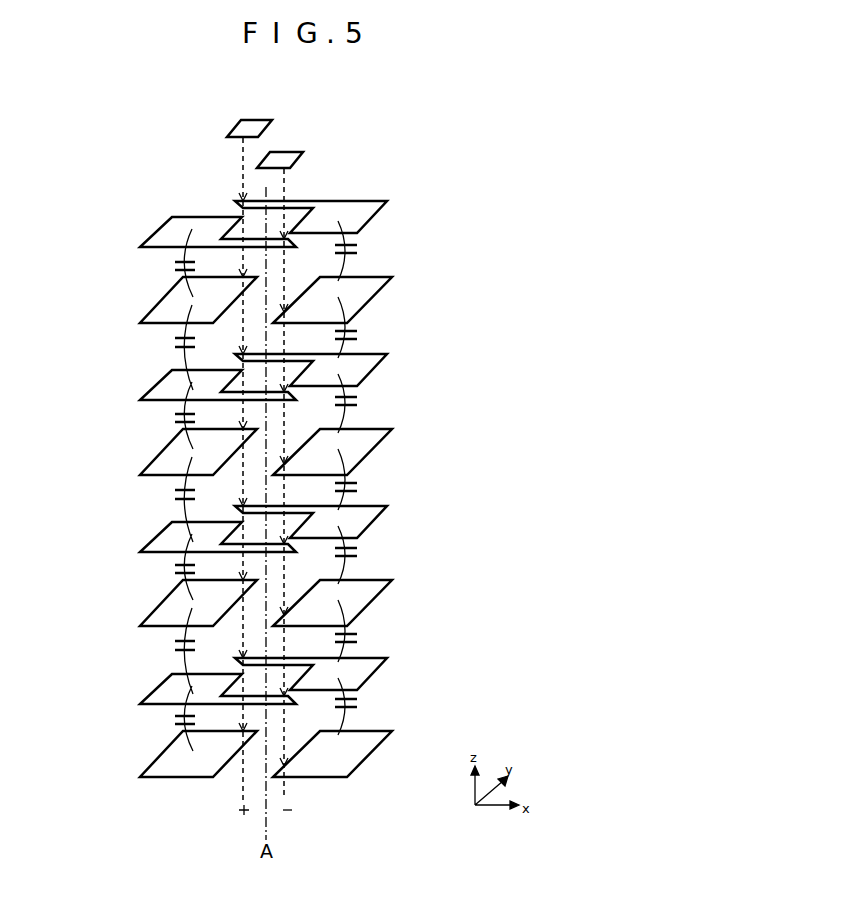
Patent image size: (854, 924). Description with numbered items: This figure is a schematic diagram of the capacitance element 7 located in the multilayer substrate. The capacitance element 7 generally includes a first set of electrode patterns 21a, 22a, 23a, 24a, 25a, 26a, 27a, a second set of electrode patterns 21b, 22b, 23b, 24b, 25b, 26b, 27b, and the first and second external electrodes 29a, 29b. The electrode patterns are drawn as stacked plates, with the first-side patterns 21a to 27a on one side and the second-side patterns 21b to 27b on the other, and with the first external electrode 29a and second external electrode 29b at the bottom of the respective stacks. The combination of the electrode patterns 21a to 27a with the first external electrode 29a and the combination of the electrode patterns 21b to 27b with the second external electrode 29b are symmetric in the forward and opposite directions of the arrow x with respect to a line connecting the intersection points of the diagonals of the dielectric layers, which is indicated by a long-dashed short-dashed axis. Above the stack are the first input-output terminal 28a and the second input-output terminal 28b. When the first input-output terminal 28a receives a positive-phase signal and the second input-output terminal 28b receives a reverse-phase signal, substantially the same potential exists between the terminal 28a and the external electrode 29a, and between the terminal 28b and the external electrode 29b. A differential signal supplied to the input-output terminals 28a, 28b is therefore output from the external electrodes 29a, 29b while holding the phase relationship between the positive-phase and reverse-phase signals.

The capacitance element 7 is at (63, 202).
The electrode pattern 21a is at (159, 690).
The electrode pattern 21b is at (374, 672).
The electrode pattern 22a is at (163, 606).
The electrode pattern 22b is at (370, 606).
The electrode pattern 23a is at (159, 536).
The electrode pattern 23b is at (374, 520).
The electrode pattern 24a is at (163, 453).
The electrode pattern 24b is at (369, 452).
The electrode pattern 25a is at (157, 387).
The electrode pattern 25b is at (375, 366).
The electrode pattern 26a is at (167, 300).
The electrode pattern 26b is at (370, 299).
The electrode pattern 27a is at (163, 230).
The electrode pattern 27b is at (376, 213).
The first input-output terminal 28a is at (236, 127).
The second input-output terminal 28b is at (300, 158).
The first external electrode 29a is at (164, 752).
The second external electrode 29b is at (367, 752).